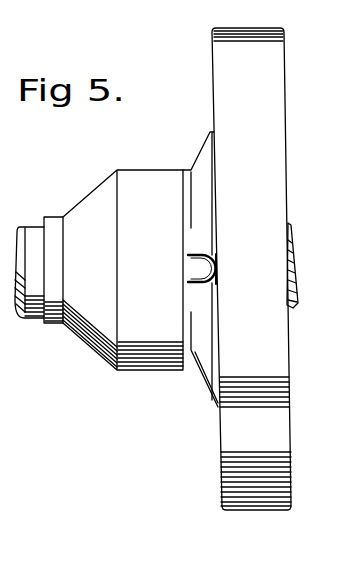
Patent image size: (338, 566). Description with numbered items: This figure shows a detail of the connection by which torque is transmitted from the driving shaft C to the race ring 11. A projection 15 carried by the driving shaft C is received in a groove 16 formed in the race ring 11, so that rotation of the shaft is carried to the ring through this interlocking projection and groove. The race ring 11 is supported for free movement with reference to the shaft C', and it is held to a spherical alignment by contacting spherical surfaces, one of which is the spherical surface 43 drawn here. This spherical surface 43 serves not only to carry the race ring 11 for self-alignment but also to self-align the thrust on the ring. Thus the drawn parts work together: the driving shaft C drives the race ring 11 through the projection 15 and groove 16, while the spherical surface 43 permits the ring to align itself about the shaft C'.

The race ring 11 is at (235, 421).
The projection 15 is at (203, 270).
The groove 16 is at (198, 262).
The spherical surface 43 is at (195, 160).
The driving shaft C is at (29, 296).
The shaft C' is at (300, 249).